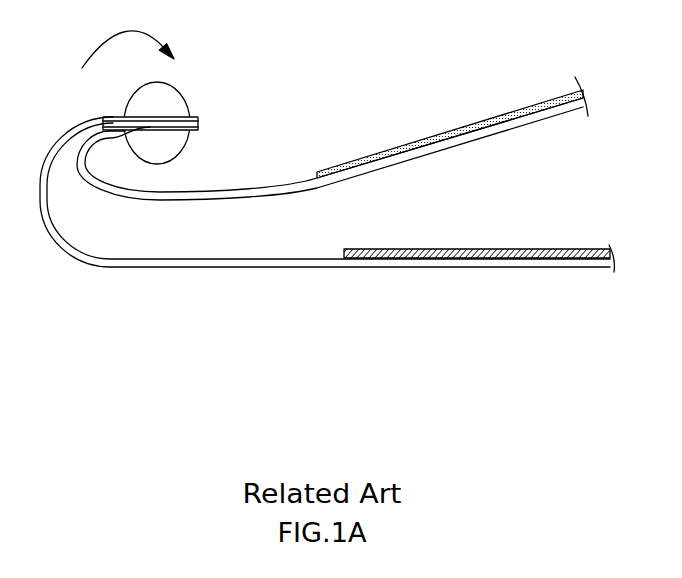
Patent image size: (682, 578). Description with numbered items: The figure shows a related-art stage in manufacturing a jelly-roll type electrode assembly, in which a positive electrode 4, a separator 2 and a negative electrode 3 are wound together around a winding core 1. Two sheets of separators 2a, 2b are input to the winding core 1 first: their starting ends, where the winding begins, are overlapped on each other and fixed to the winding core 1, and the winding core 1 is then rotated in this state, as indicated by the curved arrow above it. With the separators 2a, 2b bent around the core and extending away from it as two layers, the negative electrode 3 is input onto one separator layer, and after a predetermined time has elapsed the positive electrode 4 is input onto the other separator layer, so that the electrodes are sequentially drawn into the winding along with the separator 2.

The winding core 1 is at (180, 100).
The separator 2 is at (327, 233).
The separator 2a is at (157, 200).
The separator 2b is at (216, 267).
The negative electrode 3 is at (492, 122).
The positive electrode 4 is at (505, 253).